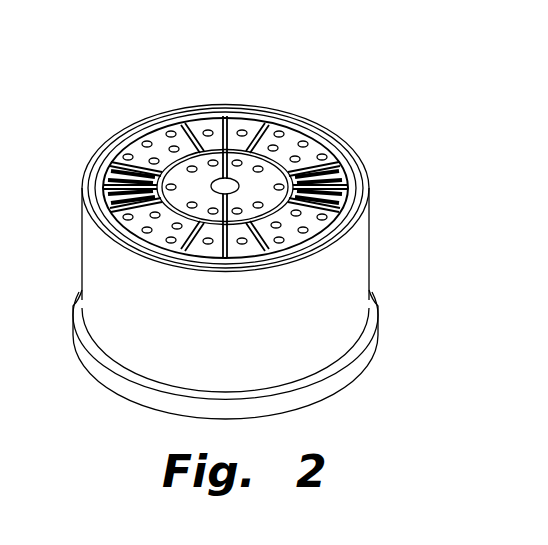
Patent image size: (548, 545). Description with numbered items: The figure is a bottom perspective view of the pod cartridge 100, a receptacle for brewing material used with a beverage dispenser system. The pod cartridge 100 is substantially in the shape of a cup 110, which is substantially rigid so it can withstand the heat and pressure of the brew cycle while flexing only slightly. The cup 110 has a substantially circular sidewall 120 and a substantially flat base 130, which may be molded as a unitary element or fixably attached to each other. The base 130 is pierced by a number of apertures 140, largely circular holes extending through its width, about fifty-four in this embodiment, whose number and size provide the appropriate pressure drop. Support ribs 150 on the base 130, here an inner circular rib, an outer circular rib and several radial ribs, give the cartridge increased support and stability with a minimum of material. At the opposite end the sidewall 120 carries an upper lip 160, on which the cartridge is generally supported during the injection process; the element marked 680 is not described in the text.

The pod cartridge 100 is at (146, 82).
The cup 110 is at (371, 209).
The sidewall 120 is at (368, 258).
The base 130 is at (315, 119).
The apertures 140 is at (277, 112).
The support ribs 150 is at (92, 168).
The upper lip 160 is at (374, 348).
The central rib 680 is at (237, 108).